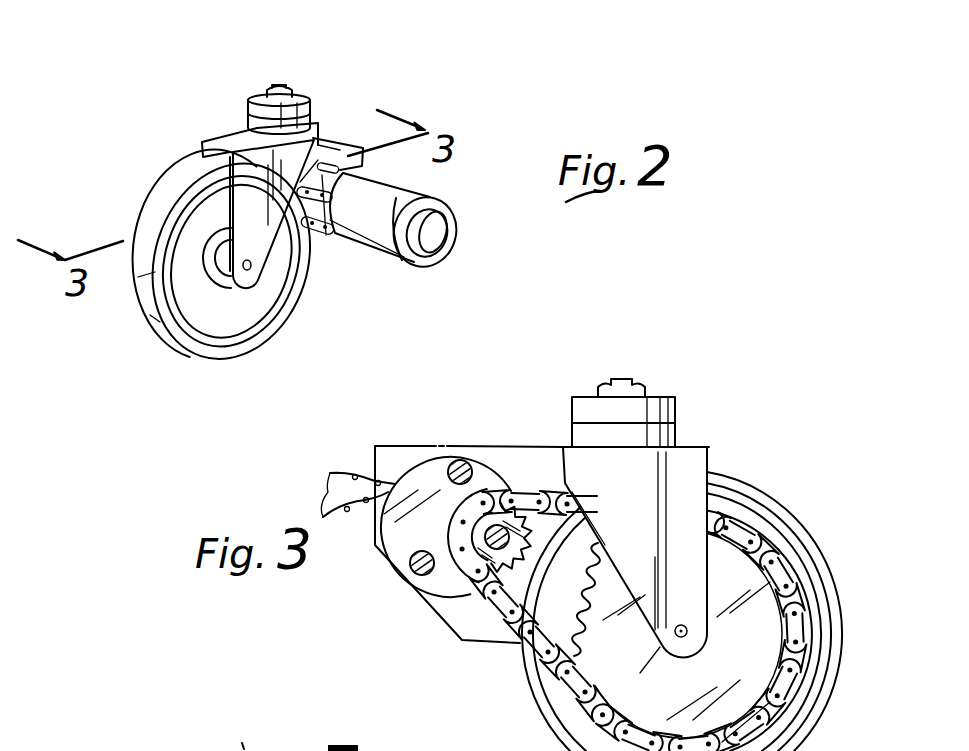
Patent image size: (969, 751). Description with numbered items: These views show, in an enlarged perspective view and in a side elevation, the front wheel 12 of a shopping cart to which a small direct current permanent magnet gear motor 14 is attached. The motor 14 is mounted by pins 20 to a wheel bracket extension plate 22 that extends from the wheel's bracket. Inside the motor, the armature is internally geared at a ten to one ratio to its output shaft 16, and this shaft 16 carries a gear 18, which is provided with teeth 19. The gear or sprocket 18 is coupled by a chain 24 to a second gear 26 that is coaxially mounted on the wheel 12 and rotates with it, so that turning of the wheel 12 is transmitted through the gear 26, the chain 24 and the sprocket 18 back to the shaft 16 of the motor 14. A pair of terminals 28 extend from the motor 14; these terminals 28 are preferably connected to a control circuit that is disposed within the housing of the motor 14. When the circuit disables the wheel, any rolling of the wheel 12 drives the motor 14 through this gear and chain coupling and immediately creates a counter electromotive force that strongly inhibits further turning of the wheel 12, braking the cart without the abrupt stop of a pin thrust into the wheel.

In FIG. 3, the wheel 12 is at (846, 633).
In FIG. 2, the gear motor 14 is at (345, 230).
In FIG. 3, the shaft 16 is at (497, 525).
In FIG. 3, the gear 18 is at (526, 522).
In FIG. 3, the teeth 19 is at (452, 624).
In FIG. 2, the pins 20 is at (336, 166).
In FIG. 2, the wheel bracket extension plate 22 is at (327, 140).
In FIG. 3, the wheel bracket extension plate 22 is at (460, 446).
In FIG. 3, the chain 24 is at (730, 519).
In FIG. 3, the gear 26 is at (566, 665).
In FIG. 3, the terminals 28 is at (323, 517).